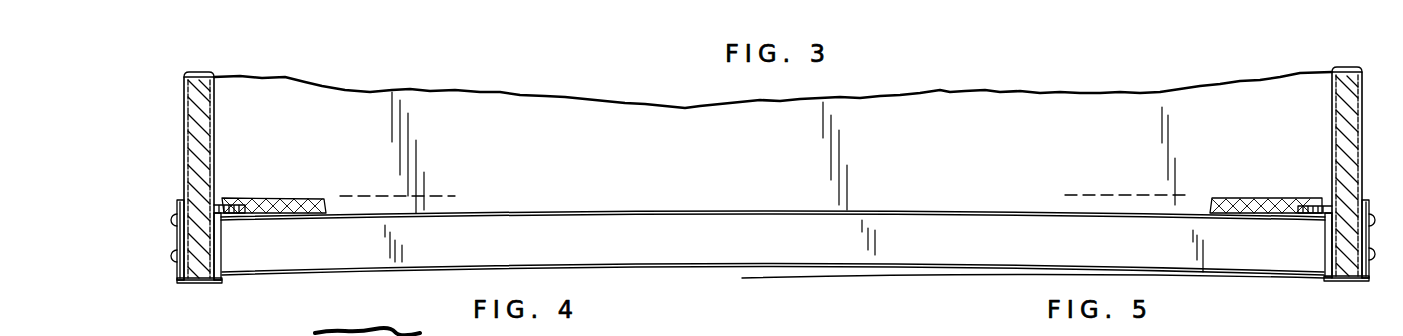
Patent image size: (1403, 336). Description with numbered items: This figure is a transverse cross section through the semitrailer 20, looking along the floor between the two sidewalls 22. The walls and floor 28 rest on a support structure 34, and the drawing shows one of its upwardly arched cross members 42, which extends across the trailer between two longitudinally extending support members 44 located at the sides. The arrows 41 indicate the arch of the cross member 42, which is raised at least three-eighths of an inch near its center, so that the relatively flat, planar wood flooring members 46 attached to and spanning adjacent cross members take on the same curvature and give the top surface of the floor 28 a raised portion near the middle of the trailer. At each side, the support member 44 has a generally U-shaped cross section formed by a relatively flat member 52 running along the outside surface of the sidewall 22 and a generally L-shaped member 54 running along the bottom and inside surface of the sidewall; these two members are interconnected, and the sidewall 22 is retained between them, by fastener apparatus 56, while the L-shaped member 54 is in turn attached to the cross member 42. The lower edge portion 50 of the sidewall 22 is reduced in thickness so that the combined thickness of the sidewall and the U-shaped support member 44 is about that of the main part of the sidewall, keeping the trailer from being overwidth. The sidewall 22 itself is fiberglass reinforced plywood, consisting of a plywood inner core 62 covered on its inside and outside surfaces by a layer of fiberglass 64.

The semitrailer 20 is at (912, 88).
The sidewall 22 is at (220, 103).
The floor 28 is at (825, 203).
The support structure 34 is at (714, 274).
The arrows 41 is at (776, 232).
The cross member 42 is at (655, 258).
The longitudinally extending support member 44 is at (181, 274).
The flooring member 46 is at (305, 200).
The lower edge portion 50 is at (205, 283).
The flat member 52 is at (181, 212).
The L-shaped member 54 is at (215, 283).
The fastener apparatus 56 is at (216, 258).
The plywood inner core 62 is at (196, 140).
The layer of fiberglass 64 is at (212, 76).